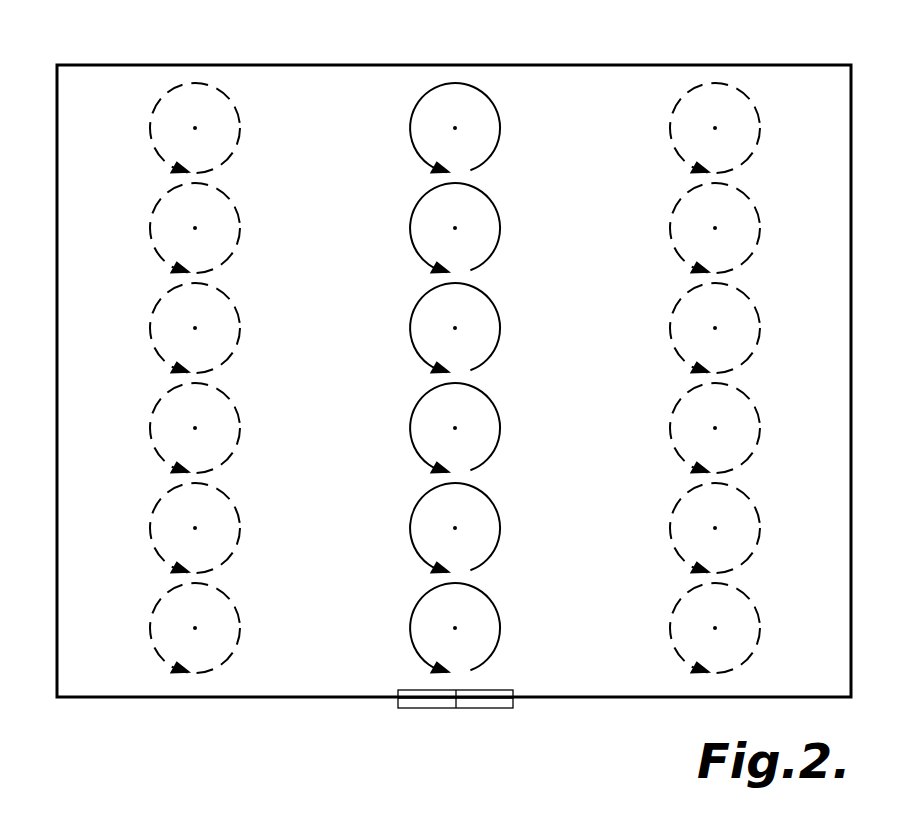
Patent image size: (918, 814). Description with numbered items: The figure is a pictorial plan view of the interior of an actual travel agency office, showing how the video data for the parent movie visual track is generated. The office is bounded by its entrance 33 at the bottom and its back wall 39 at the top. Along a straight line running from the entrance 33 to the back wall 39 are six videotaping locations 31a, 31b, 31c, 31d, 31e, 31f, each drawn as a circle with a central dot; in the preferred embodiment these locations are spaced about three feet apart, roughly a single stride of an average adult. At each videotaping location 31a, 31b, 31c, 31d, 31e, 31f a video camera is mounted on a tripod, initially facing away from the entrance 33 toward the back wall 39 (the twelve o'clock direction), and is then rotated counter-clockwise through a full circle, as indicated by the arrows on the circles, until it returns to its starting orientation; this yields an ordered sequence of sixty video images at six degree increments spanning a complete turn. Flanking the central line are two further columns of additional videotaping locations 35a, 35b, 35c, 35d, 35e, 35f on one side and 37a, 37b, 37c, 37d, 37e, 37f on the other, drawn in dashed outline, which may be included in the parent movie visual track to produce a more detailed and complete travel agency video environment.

The back wall 39 is at (455, 65).
The entrance 33 is at (513, 708).
The videotaping location 31a is at (488, 630).
The videotaping location 31b is at (488, 530).
The videotaping location 31c is at (488, 430).
The videotaping location 31d is at (488, 330).
The videotaping location 31e is at (488, 230).
The videotaping location 31f is at (488, 130).
The additional videotaping location 35a is at (750, 628).
The additional videotaping location 35b is at (750, 528).
The additional videotaping location 35c is at (750, 428).
The additional videotaping location 35d is at (750, 328).
The additional videotaping location 35e is at (750, 228).
The additional videotaping location 35f is at (750, 128).
The additional videotaping location 37a is at (230, 628).
The additional videotaping location 37b is at (230, 528).
The additional videotaping location 37c is at (230, 428).
The additional videotaping location 37d is at (230, 328).
The additional videotaping location 37e is at (230, 228).
The additional videotaping location 37f is at (230, 128).